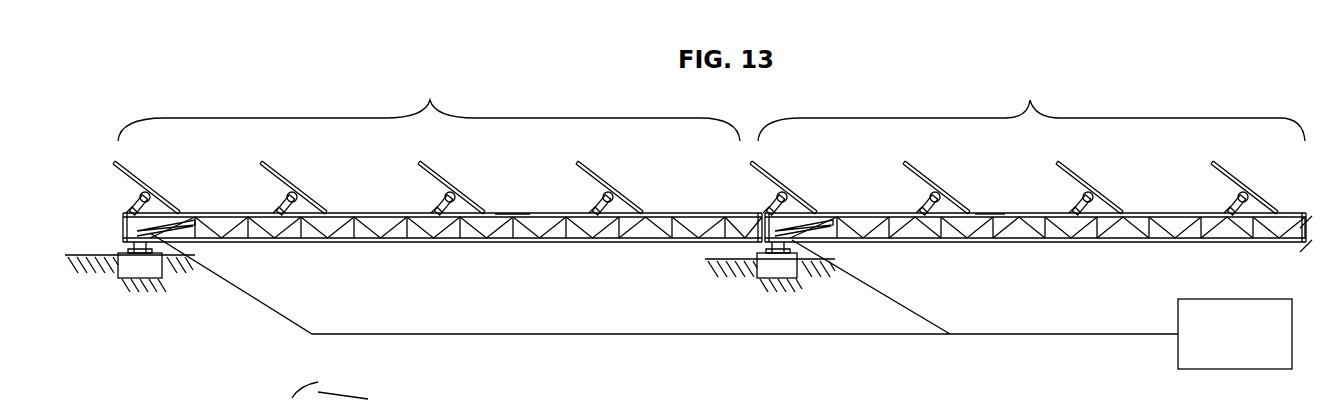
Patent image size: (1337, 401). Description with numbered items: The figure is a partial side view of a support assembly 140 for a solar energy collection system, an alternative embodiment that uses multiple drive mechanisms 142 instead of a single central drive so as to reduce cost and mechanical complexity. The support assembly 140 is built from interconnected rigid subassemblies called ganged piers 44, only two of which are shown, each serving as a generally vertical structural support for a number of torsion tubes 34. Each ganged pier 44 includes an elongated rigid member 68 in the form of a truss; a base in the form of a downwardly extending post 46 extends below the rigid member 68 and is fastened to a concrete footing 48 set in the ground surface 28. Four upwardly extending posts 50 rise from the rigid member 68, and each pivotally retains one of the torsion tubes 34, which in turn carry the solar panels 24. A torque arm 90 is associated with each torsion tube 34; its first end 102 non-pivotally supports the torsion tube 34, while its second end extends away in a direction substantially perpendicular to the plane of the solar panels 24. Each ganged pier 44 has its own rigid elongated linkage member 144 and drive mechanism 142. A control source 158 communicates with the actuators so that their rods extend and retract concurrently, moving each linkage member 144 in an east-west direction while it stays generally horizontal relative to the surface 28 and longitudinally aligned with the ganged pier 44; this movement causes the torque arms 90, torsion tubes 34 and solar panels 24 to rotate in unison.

The ganged pier 44 is at (430, 105).
The elongated rigid member 68 is at (510, 242).
The linkage member 144 is at (510, 213).
The solar panel 24 is at (442, 172).
The torsion tube 34 is at (600, 203).
The upwardly extending post 50 is at (300, 196).
The torque arm 90 is at (435, 210).
The drive mechanism 142 is at (178, 223).
The downwardly extending post 46 is at (112, 250).
The concrete footing 48 is at (125, 278).
The surface 28 is at (77, 262).
The support assembly 140 is at (872, 377).
The first end of torque arm 102 is at (508, 400).
The control source 158 is at (1200, 300).